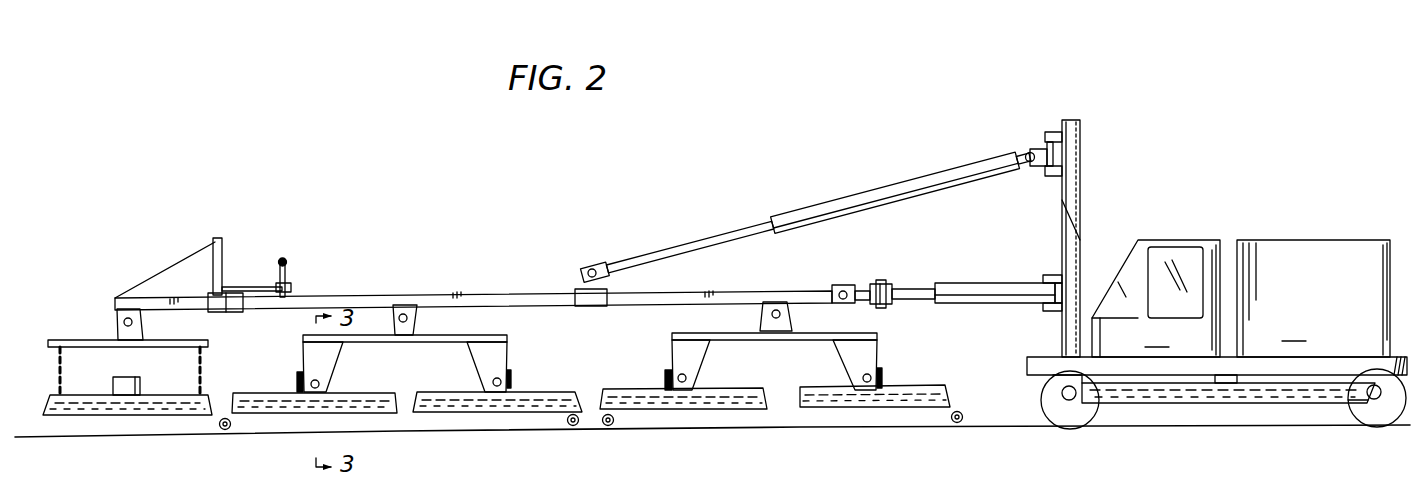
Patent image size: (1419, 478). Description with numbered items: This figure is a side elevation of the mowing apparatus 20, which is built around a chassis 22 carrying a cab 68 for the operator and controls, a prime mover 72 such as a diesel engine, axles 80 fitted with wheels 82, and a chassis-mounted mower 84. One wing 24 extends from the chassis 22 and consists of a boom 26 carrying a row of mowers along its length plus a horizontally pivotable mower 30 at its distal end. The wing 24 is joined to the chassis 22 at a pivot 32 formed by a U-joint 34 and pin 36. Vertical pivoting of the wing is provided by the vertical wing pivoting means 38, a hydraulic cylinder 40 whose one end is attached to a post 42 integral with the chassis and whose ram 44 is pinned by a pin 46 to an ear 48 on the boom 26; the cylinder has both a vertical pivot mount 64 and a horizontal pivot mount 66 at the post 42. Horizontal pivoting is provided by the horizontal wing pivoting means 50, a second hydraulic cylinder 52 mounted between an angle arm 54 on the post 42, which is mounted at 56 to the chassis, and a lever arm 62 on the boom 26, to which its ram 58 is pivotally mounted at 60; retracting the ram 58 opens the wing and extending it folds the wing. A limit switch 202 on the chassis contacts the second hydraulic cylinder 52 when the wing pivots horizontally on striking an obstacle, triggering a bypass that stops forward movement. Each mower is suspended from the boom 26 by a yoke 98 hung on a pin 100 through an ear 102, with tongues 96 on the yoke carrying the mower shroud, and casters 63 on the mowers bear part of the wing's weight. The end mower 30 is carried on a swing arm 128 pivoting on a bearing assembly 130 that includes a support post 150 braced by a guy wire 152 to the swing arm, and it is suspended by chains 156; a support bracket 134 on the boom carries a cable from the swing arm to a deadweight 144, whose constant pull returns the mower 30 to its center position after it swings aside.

The mowing apparatus 20 is at (1142, 104).
The chassis 22 is at (1335, 366).
The wing 24 is at (534, 289).
The boom 26 is at (381, 293).
The horizontally pivotable mower 30 is at (48, 365).
The pivot 32 is at (833, 261).
The U-joint 34 is at (848, 303).
The pin 36 is at (846, 290).
The vertical wing pivoting means 38 is at (765, 184).
The hydraulic cylinder 40 is at (918, 196).
The post 42 is at (1082, 183).
The ram 44 is at (686, 245).
The pin 46 is at (590, 268).
The ear 48 is at (607, 283).
The horizontal wing pivoting means 50 is at (1017, 262).
The second hydraulic cylinder 52 is at (982, 304).
The angle arm 54 is at (1080, 290).
The post mounting 56 is at (1081, 233).
The ram 58 is at (928, 288).
The pivotal mounting 60 is at (882, 306).
The lever arm 62 is at (881, 285).
The caster 63 is at (612, 427).
The vertical pivot mount 64 is at (1030, 150).
The horizontal pivot mount 66 is at (1052, 132).
The cab 68 is at (1156, 298).
The prime mover 72 is at (1313, 298).
The axle 80 is at (1063, 396).
The wheel 82 is at (1353, 410).
The mower 84 is at (1147, 405).
The tongue 96 is at (500, 365).
The yoke 98 is at (424, 348).
The pin 100 is at (408, 323).
The ear 102 is at (762, 318).
The swing arm 128 is at (162, 308).
The bearing assembly 130 is at (207, 286).
The support bracket 134 is at (278, 280).
The deadweight 144 is at (293, 283).
The support post 150 is at (221, 242).
The guy wire 152 is at (170, 267).
The chain 156 is at (203, 355).
The limit switch 202 is at (1065, 315).